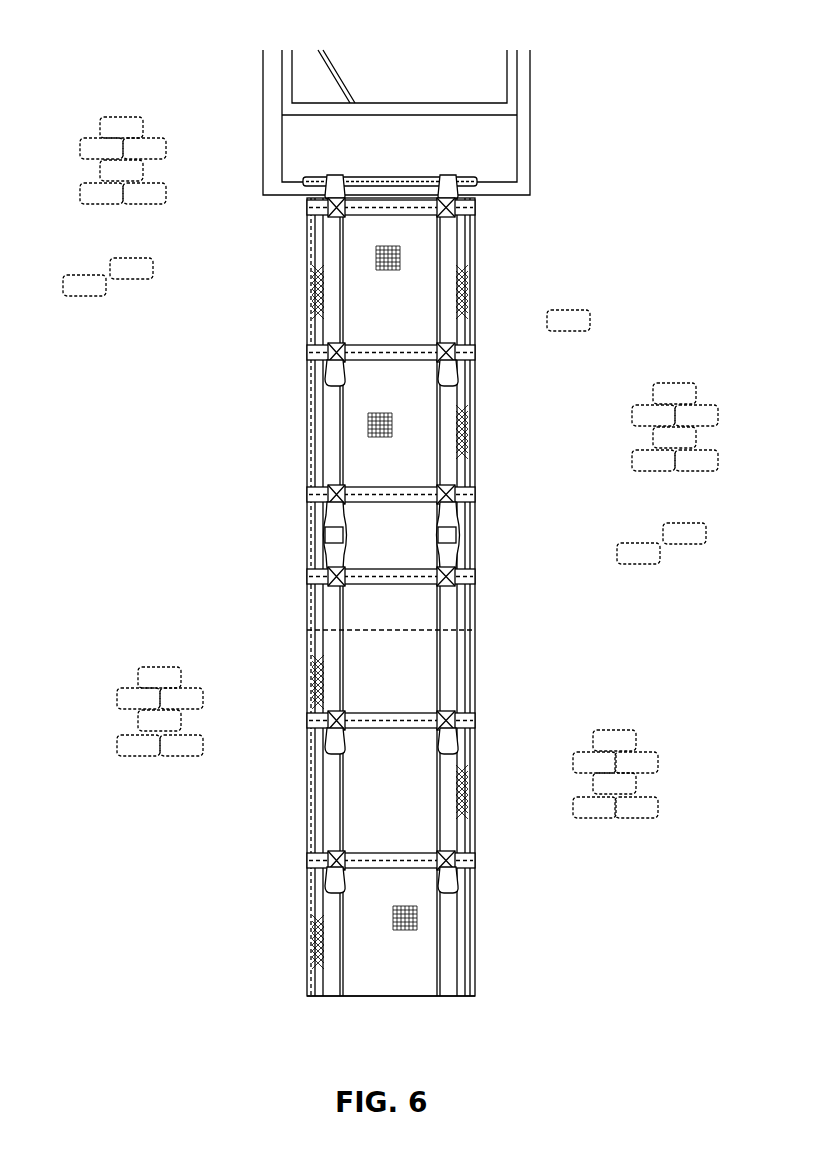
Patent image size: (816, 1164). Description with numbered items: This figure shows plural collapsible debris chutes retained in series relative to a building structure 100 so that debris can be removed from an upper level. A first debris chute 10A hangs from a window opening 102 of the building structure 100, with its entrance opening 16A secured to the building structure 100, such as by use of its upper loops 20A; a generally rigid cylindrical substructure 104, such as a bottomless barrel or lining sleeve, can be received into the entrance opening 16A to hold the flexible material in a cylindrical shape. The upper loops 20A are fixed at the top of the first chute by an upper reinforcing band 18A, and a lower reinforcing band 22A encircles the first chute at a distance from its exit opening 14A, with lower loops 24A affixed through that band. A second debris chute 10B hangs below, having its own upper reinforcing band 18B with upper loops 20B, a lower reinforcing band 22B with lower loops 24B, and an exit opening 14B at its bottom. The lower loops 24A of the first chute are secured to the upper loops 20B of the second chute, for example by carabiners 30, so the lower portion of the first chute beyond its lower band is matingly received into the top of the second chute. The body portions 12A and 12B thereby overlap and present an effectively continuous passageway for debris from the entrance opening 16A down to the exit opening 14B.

The building structure 100 is at (637, 184).
The window opening 102 is at (265, 110).
The rigid cylindrical substructure 104 is at (477, 183).
The first debris chute 10A is at (486, 293).
The second debris chute 10B is at (486, 782).
The body portion of first debris chute 12A is at (307, 318).
The body portion of second debris chute 12B is at (307, 680).
The exit opening of first debris chute 14A is at (307, 630).
The exit opening of second debris chute 14B is at (385, 997).
The entrance opening of first debris chute 16A is at (385, 185).
The upper reinforcing band of first debris chute 18A is at (362, 218).
The upper reinforcing band of second debris chute 18B is at (478, 578).
The upper loops of first debris chute 20A is at (305, 183).
The upper loops of second debris chute 20B is at (455, 555).
The lower reinforcing band of first debris chute 22A is at (360, 486).
The lower reinforcing band of second debris chute 22B is at (330, 858).
The lower loops of first debris chute 24A is at (337, 510).
The lower loops of second debris chute 24B is at (322, 880).
The carabiner 30 is at (323, 537).